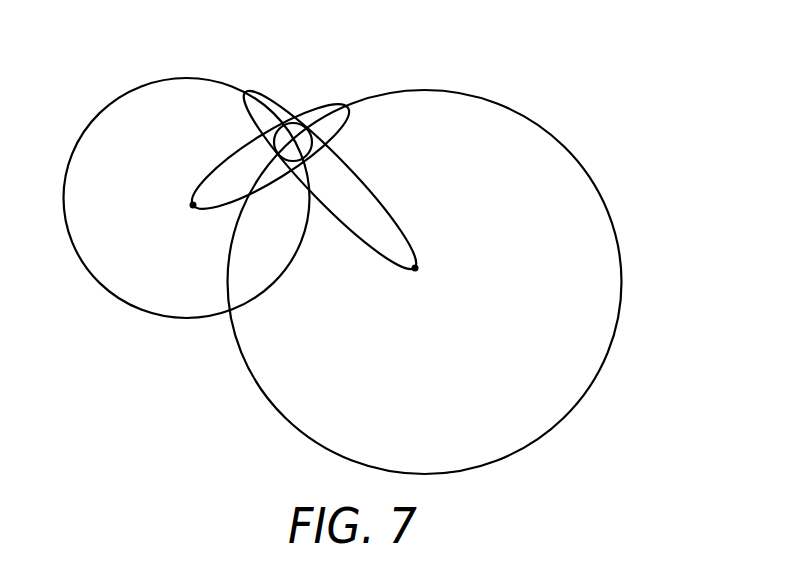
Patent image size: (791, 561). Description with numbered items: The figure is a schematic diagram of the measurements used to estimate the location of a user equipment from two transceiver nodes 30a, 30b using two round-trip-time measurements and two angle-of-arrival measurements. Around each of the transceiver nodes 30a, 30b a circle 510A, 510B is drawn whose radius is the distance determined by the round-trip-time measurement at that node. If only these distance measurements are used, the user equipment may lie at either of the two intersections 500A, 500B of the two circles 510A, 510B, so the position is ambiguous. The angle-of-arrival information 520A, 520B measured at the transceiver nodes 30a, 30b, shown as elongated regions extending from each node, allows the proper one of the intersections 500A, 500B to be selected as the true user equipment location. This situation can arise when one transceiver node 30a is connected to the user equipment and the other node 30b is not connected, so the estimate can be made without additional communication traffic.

The circle 510A is at (502, 80).
The circle 510B is at (117, 105).
The AOA information 520A is at (343, 172).
The AOA information 520B is at (232, 155).
The intersection 500A is at (230, 313).
The intersection 500B is at (298, 120).
The transceiver node 30a is at (415, 268).
The transceiver node 30b is at (193, 205).